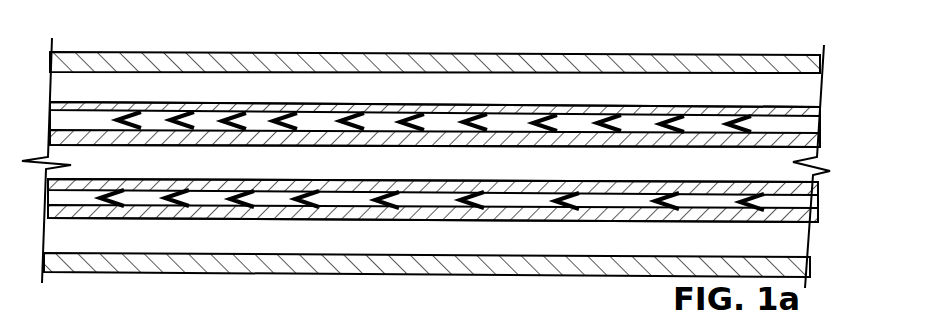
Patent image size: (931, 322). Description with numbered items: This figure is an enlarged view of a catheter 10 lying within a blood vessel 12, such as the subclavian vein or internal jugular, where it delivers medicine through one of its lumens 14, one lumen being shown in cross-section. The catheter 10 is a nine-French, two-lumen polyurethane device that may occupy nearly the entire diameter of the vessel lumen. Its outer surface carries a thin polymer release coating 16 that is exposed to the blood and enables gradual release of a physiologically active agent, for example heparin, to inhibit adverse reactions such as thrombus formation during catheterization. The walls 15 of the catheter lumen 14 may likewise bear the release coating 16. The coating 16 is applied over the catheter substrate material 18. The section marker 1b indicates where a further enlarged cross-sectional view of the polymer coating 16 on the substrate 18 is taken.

The catheter 10 is at (320, 86).
The blood vessel 12 is at (250, 52).
The lumen 14 is at (386, 172).
The walls of the catheter lumen 15 is at (830, 129).
The polymer release coating 16 is at (513, 135).
The catheter substrate material 18 is at (53, 200).
The section line 1b is at (648, 125).